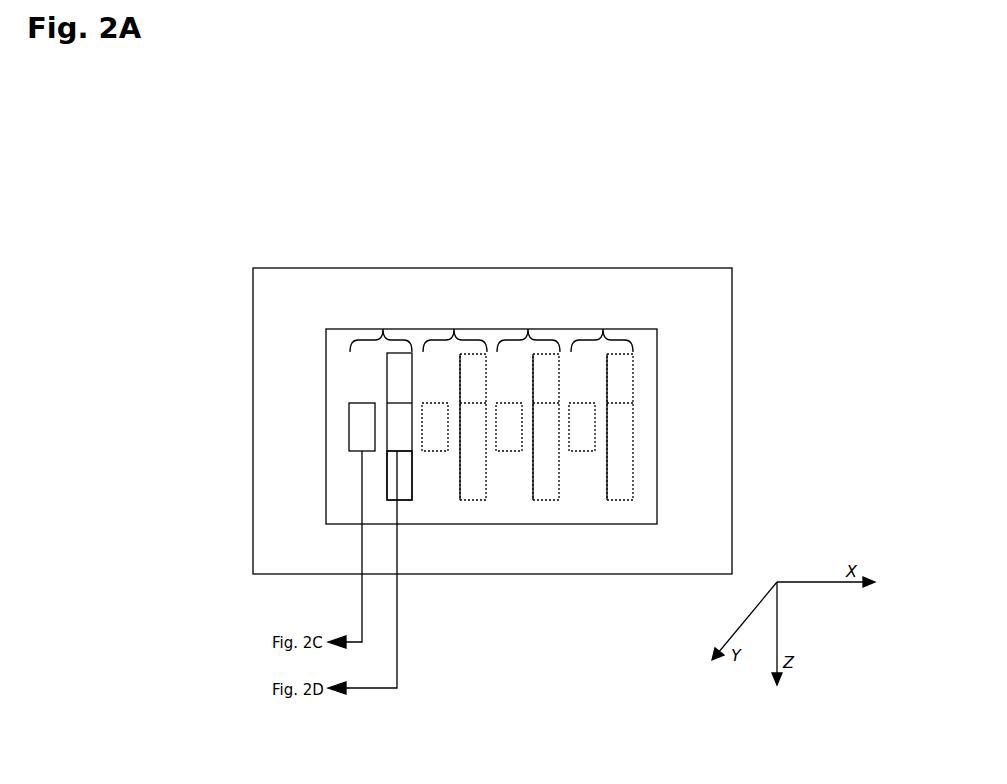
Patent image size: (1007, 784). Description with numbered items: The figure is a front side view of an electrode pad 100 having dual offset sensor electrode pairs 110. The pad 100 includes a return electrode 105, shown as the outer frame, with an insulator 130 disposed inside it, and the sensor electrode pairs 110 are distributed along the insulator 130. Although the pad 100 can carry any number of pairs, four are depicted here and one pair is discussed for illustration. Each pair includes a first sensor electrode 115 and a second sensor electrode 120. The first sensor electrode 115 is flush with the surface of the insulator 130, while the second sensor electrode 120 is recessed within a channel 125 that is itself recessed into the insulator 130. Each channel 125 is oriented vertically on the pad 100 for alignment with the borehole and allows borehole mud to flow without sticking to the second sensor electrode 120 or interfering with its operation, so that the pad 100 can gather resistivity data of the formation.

The electrode pad 100 is at (150, 202).
The return electrode 105 is at (313, 268).
The sensor electrode pairs 110 is at (603, 329).
The first sensor electrode 115 is at (375, 413).
The second sensor electrode 120 is at (399, 438).
The channel 125 is at (412, 477).
The insulator 130 is at (645, 344).